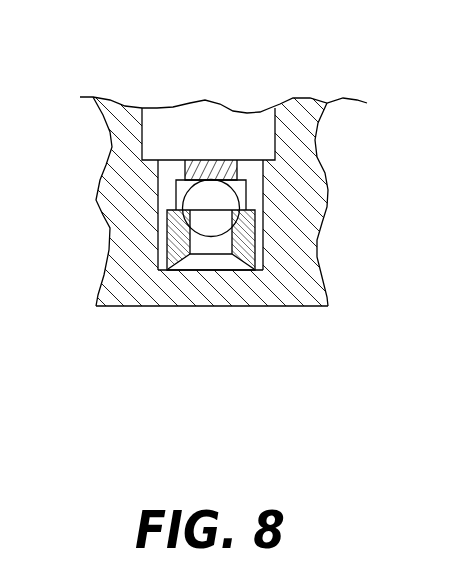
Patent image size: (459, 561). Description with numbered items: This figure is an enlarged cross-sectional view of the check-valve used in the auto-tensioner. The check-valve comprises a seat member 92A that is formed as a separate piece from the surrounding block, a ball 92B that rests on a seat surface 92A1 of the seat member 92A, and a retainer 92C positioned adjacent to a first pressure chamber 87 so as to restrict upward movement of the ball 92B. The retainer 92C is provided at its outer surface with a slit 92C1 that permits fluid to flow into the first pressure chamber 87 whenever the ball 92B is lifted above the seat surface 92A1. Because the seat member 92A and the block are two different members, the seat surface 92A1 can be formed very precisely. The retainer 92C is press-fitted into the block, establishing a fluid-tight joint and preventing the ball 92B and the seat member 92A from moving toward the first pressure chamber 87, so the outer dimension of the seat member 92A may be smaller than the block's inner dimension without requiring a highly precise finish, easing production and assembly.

The first pressure chamber 87 is at (180, 123).
The seat member 92A is at (168, 238).
The seat surface 92A1 is at (243, 238).
The ball 92B is at (200, 199).
The retainer 92C is at (264, 190).
The slit 92C1 is at (207, 243).